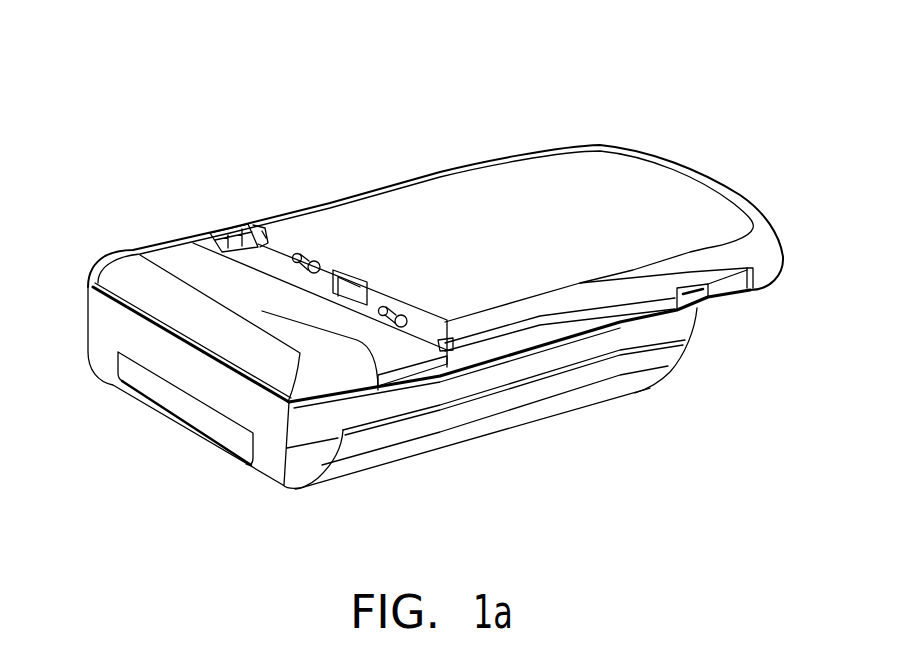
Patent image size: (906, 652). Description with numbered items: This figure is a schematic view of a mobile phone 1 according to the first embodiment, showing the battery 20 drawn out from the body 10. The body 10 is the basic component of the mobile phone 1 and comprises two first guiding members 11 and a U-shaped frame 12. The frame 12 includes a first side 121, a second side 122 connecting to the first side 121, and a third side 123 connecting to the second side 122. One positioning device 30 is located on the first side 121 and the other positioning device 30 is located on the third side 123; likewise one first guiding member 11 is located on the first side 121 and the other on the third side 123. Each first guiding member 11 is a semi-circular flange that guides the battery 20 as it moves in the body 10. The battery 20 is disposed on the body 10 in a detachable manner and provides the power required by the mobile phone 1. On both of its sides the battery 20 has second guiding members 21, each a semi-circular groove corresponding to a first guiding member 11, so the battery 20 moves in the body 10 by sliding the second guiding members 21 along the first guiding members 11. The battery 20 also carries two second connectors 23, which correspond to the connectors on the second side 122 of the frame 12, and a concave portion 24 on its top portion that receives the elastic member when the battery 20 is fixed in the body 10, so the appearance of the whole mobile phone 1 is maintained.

The mobile phone 1 is at (77, 26).
The body 10 is at (130, 307).
The first guiding member 11 is at (268, 240).
The U-shaped frame 12 is at (372, 38).
The first side 121 is at (446, 338).
The second side 122 is at (222, 243).
The third side 123 is at (258, 232).
The battery 20 is at (628, 173).
The second guiding member 21 is at (700, 300).
The second connector 23 is at (300, 272).
The concave portion 24 is at (333, 268).
The positioning device 30 is at (236, 226).